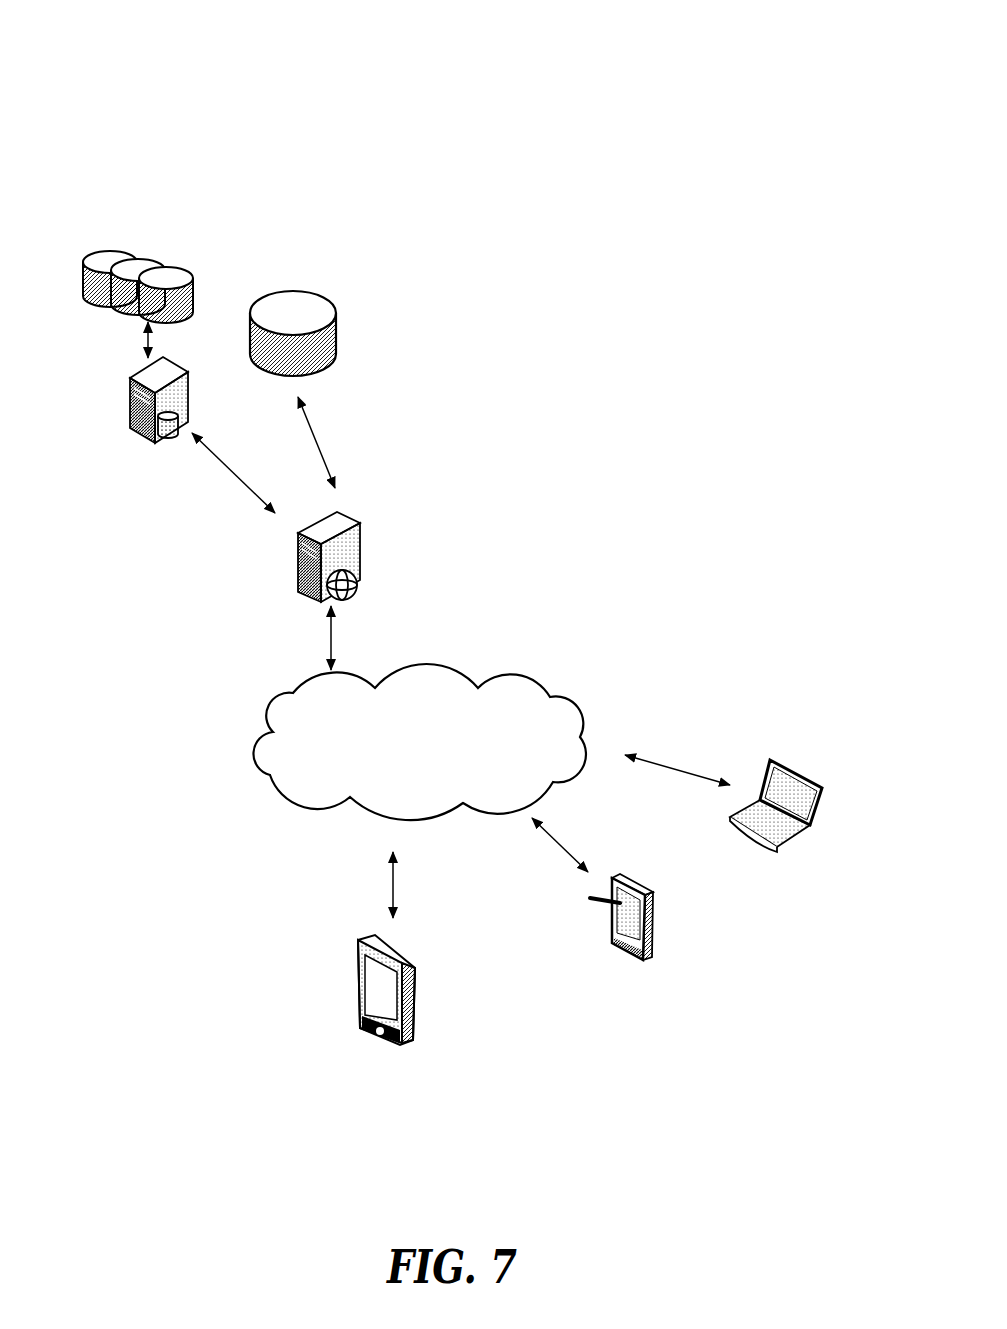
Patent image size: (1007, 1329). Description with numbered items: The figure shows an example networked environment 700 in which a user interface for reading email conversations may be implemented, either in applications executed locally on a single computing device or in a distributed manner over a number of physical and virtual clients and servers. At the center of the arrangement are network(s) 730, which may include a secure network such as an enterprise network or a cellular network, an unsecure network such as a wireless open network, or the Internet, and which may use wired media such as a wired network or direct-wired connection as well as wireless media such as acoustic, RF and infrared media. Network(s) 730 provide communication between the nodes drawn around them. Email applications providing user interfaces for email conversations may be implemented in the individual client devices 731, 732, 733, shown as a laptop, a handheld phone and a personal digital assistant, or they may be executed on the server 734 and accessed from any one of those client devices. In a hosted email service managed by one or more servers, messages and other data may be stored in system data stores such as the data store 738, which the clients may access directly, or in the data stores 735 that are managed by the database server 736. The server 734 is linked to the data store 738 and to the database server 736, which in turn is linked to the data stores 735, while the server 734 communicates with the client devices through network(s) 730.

The networked environment 700 is at (757, 68).
The network(s) 730 is at (404, 778).
The client device 731 is at (805, 762).
The client device 732 is at (633, 870).
The client device 733 is at (418, 938).
The server 734 is at (288, 580).
The data stores 735 is at (157, 243).
The database server 736 is at (165, 445).
The data store 738 is at (292, 272).